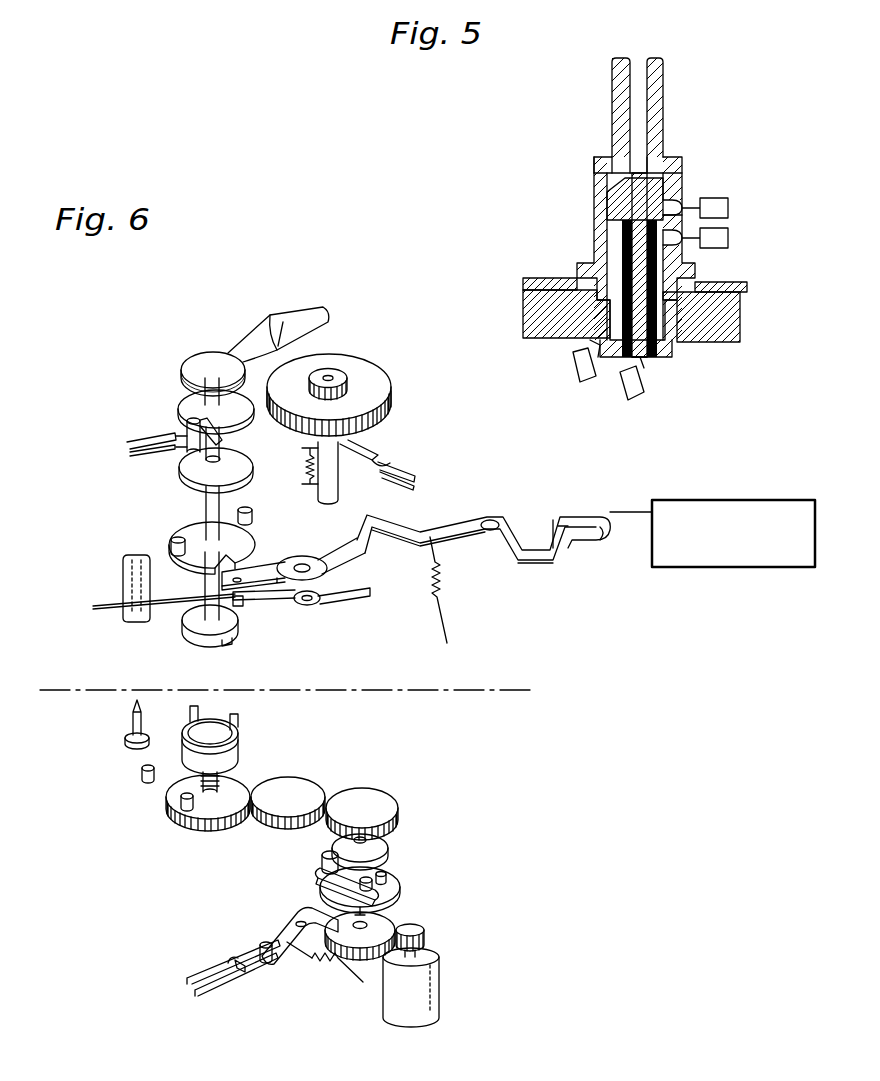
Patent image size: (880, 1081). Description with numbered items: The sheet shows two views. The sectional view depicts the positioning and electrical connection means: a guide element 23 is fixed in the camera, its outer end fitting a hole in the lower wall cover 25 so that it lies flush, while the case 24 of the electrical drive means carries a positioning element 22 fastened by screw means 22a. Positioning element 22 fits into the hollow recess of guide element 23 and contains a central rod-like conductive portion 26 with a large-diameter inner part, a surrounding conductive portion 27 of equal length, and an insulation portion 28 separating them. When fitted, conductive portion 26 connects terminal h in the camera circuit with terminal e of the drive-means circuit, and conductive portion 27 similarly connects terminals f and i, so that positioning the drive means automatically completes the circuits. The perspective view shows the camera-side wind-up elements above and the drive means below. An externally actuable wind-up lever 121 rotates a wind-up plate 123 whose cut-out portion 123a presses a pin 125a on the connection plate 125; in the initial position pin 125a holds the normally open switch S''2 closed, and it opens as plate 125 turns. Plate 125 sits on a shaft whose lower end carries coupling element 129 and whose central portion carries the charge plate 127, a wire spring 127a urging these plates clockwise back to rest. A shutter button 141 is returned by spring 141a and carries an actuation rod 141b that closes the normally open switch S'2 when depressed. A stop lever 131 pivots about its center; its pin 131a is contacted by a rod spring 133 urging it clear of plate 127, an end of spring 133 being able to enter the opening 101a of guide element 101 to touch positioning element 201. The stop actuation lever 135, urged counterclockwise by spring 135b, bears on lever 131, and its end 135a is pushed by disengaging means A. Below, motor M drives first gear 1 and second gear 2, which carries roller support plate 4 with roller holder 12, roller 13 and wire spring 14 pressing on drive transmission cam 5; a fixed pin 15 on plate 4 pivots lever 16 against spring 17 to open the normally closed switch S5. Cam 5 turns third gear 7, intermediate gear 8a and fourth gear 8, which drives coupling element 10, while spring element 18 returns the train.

In FIG. 5, the guide element 23 is at (660, 95).
In FIG. 5, the positioning element 22 is at (604, 170).
In FIG. 5, the screw means 22a is at (668, 362).
In FIG. 5, the conductive portion 26 is at (628, 200).
In FIG. 5, the conductive portion 27 is at (626, 238).
In FIG. 5, the insulation portion 28 is at (626, 262).
In FIG. 5, the terminal h is at (682, 205).
In FIG. 5, the terminal i is at (690, 240).
In FIG. 5, the case 24 is at (724, 343).
In FIG. 5, the lower wall cover 25 is at (740, 290).
In FIG. 5, the terminal f is at (584, 380).
In FIG. 5, the terminal e is at (636, 400).
In FIG. 6, the wind-up lever 121 is at (215, 365).
In FIG. 6, the wind-up plate 123 is at (200, 405).
In FIG. 6, the cut-out portion 123a is at (190, 420).
In FIG. 6, the normally open switch S''2 is at (137, 442).
In FIG. 6, the shutter button 141 is at (333, 376).
In FIG. 6, the spring 141a is at (310, 470).
In FIG. 6, the actuation rod 141b is at (362, 457).
In FIG. 6, the normally open switch S'2 is at (409, 481).
In FIG. 6, the connection plate 125 is at (200, 478).
In FIG. 6, the pin 125a is at (202, 462).
In FIG. 6, the charge plate 127 is at (175, 553).
In FIG. 6, the wire spring 127a is at (178, 538).
In FIG. 6, the guide element 101 is at (123, 585).
In FIG. 6, the opening 101a is at (125, 612).
In FIG. 6, the coupling element 129 is at (210, 626).
In FIG. 6, the stop lever 131 is at (295, 560).
In FIG. 6, the pin 131a is at (240, 607).
In FIG. 6, the rod spring 133 is at (290, 606).
In FIG. 6, the stop actuation lever 135 is at (437, 530).
In FIG. 6, the lever end 135a is at (592, 520).
In FIG. 6, the spring 135b is at (447, 598).
In FIG. 6, the disengaging means A is at (750, 500).
In FIG. 6, the positioning element 201 is at (128, 728).
In FIG. 6, the coupling element 10 is at (232, 730).
In FIG. 6, the spring element 18 is at (155, 780).
In FIG. 6, the fourth gear 8 is at (240, 790).
In FIG. 6, the intermediate gear 8a is at (300, 790).
In FIG. 6, the third gear 7 is at (378, 800).
In FIG. 6, the drive transmission cam 5 is at (386, 845).
In FIG. 6, the roller support plate 4 is at (396, 886).
In FIG. 6, the roller 13 is at (322, 864).
In FIG. 6, the roller holder 12 is at (320, 878).
In FIG. 6, the wire spring 14 is at (296, 910).
In FIG. 6, the fixed pin 15 is at (260, 946).
In FIG. 6, the normally closed switch S5 is at (225, 979).
In FIG. 6, the lever 16 is at (292, 945).
In FIG. 6, the spring 17 is at (330, 968).
In FIG. 6, the second gear 2 is at (396, 925).
In FIG. 6, the first gear 1 is at (424, 937).
In FIG. 6, the drive motor M is at (430, 985).